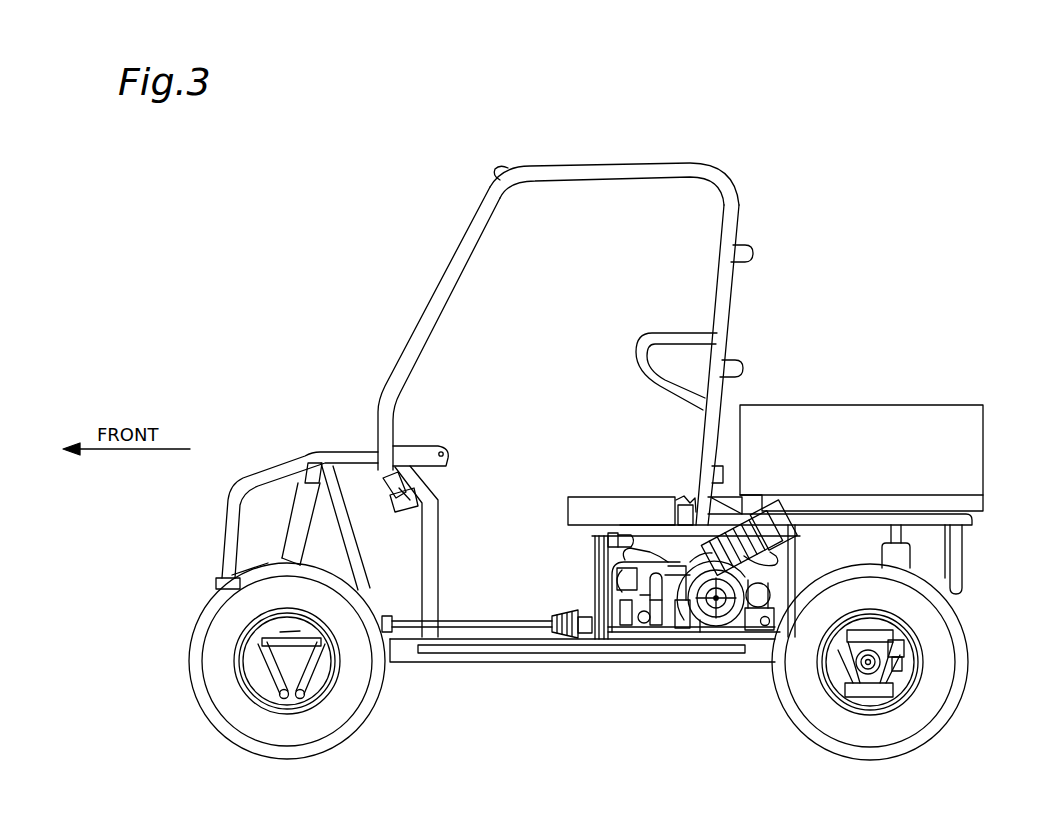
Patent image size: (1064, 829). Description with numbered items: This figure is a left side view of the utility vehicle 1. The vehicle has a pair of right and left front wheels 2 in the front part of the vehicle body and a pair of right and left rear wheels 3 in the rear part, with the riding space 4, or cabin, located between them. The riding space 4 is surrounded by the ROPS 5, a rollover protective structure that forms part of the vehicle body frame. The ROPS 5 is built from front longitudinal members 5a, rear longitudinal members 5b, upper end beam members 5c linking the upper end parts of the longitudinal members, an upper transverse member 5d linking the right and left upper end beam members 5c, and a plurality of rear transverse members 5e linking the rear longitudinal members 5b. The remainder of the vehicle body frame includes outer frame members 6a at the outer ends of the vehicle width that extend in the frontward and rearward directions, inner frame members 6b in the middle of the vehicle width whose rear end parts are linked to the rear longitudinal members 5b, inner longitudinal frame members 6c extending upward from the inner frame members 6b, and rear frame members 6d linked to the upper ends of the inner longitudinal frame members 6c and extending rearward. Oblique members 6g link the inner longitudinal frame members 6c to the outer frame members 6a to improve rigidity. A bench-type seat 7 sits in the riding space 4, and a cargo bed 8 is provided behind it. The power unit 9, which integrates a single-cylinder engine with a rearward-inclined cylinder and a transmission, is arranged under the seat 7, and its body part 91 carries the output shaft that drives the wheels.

The utility vehicle 1 is at (785, 153).
The front wheels 2 is at (289, 732).
The rear wheels 3 is at (900, 730).
The riding space 4 is at (489, 275).
The ROPS 5 is at (679, 147).
The front longitudinal members 5a is at (433, 302).
The rear longitudinal members 5b is at (728, 288).
The upper end beam members 5c is at (606, 174).
The upper transverse member 5d is at (503, 165).
The rear transverse members 5e is at (748, 250).
The outer frame members 6a is at (518, 648).
The inner frame members 6b is at (664, 640).
The inner longitudinal frame members 6c is at (594, 560).
The rear frame members 6d is at (759, 632).
The oblique members 6g is at (612, 505).
The seat 7 is at (618, 613).
The cargo bed 8 is at (965, 443).
The power unit 9 is at (700, 640).
The body part 91 is at (712, 605).